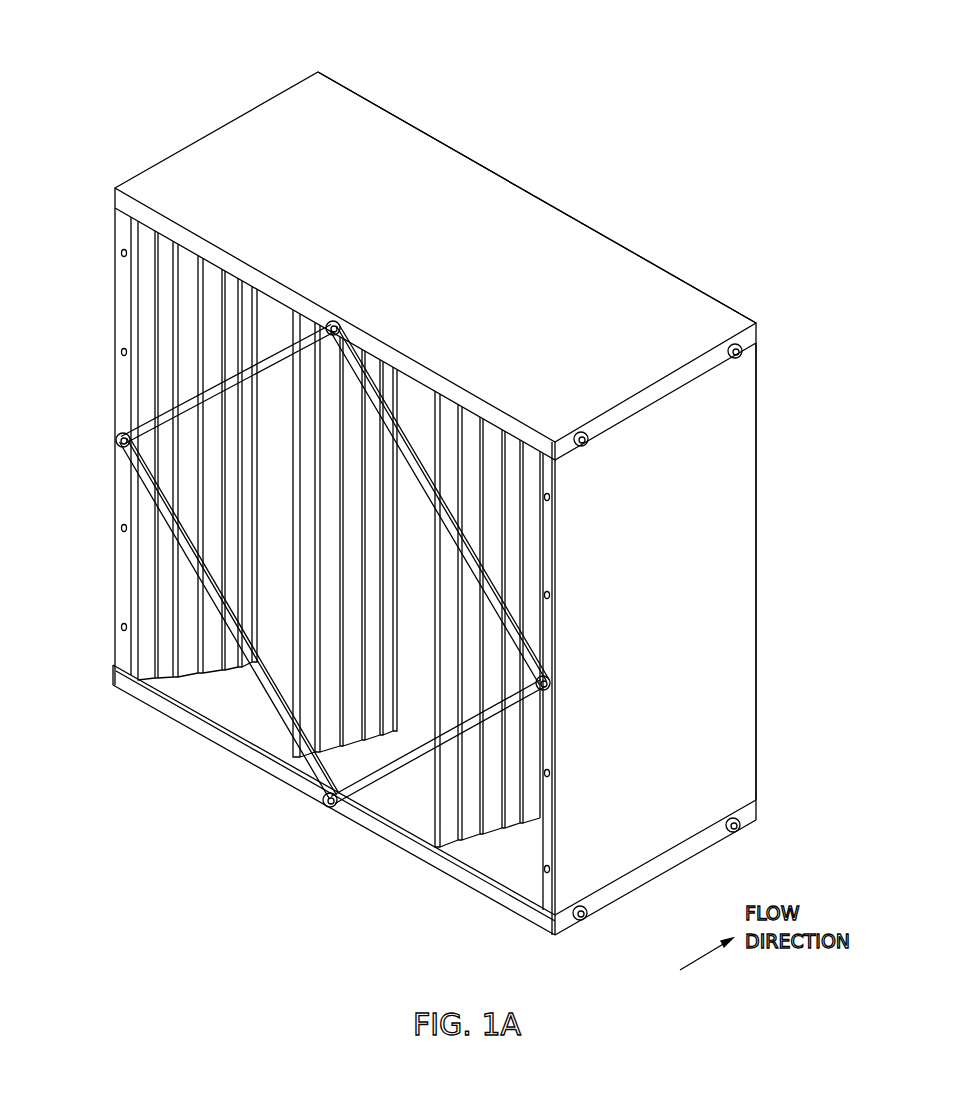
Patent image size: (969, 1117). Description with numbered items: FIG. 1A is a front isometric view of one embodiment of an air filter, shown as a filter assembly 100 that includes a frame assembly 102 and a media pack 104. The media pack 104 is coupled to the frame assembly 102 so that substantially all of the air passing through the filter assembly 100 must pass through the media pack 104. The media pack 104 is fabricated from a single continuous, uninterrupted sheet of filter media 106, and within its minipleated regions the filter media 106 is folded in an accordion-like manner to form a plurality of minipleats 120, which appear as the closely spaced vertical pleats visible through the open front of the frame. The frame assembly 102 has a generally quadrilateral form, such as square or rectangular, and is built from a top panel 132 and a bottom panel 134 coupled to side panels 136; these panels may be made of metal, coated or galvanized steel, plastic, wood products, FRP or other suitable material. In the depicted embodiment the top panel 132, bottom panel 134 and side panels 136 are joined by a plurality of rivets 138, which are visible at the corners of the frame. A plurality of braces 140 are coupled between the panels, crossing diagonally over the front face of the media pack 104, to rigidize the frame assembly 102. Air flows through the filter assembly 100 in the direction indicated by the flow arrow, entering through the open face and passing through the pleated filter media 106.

The filter assembly 100 is at (424, 492).
The frame assembly 102 is at (220, 128).
The media pack 104 is at (412, 805).
The filter media 106 is at (278, 714).
The minipleats 120 is at (490, 818).
The top panel 132 is at (637, 292).
The bottom panel 134 is at (473, 895).
The side panels 136 is at (119, 307).
The rivets 138 is at (736, 359).
The braces 140 is at (281, 350).